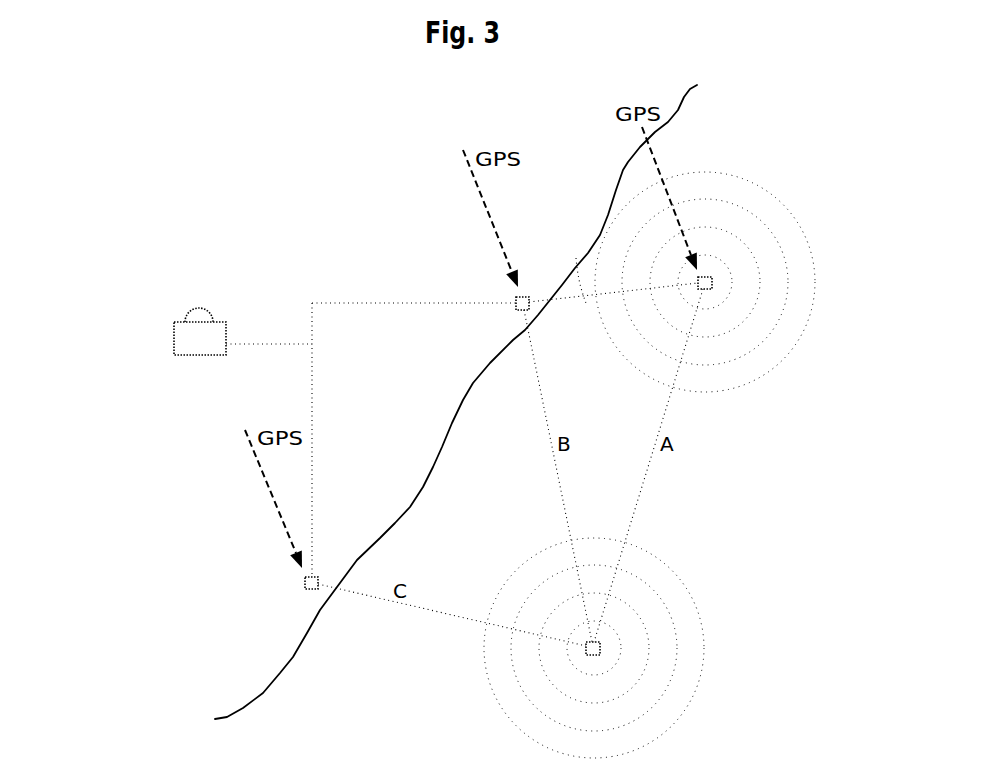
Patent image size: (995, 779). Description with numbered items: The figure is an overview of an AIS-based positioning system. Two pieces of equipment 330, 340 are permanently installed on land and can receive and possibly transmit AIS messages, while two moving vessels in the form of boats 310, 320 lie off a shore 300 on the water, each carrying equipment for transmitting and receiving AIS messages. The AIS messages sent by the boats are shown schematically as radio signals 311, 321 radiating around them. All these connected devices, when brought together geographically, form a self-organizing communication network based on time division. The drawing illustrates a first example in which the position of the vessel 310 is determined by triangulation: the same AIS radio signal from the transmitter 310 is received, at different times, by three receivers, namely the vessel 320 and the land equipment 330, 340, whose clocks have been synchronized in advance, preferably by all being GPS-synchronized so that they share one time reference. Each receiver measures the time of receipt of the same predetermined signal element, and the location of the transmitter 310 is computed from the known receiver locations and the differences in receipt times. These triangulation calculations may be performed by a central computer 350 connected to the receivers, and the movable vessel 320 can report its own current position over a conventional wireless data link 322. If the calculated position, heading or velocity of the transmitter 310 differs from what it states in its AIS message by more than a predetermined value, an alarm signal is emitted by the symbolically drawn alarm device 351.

The shore 300 is at (456, 402).
The vessel 310 is at (601, 645).
The radio signals 311 is at (650, 555).
The vessel 320 is at (712, 280).
The radio signals 321 is at (733, 175).
The wireless data link 322 is at (566, 248).
The equipment 330 is at (513, 297).
The equipment 340 is at (303, 578).
The central computer 350 is at (173, 332).
The alarm device 351 is at (199, 309).